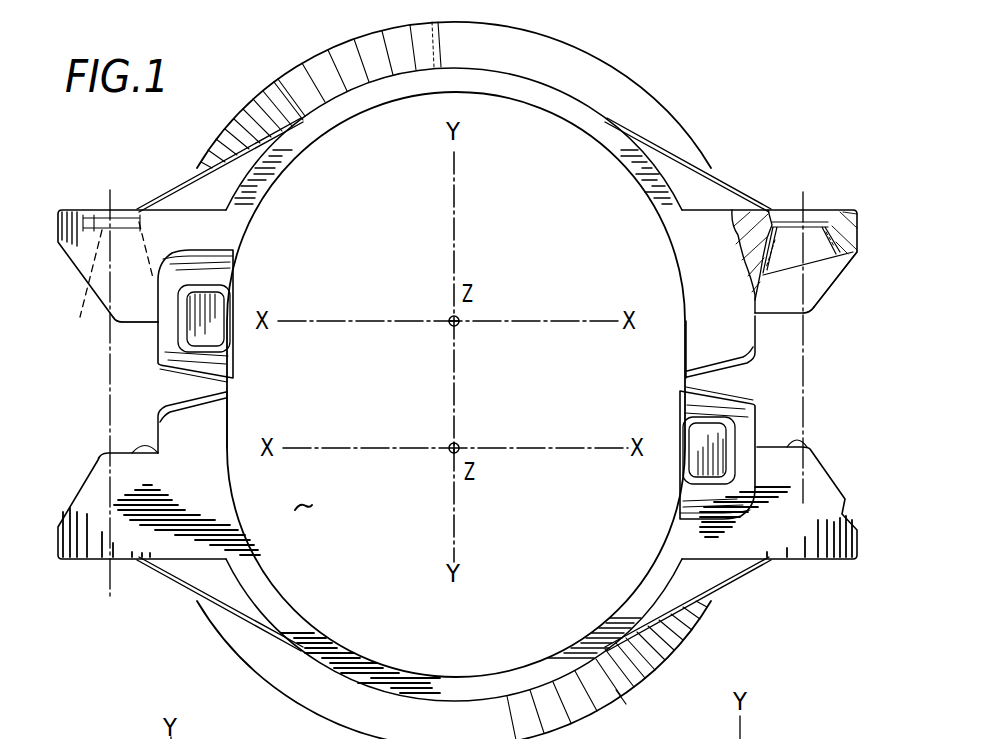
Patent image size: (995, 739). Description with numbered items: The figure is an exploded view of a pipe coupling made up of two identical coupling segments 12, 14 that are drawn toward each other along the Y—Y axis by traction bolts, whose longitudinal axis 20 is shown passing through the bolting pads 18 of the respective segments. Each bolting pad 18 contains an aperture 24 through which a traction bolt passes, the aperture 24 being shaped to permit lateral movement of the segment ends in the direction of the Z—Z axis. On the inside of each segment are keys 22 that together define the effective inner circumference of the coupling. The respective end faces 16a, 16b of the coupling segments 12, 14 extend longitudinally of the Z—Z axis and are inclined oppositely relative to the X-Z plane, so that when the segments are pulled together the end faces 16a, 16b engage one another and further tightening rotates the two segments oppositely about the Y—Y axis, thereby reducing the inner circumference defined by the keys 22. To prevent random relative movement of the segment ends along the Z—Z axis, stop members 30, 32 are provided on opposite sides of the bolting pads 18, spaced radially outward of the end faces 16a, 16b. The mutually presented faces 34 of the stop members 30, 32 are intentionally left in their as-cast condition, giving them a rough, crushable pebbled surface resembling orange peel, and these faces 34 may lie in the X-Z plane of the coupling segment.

The coupling segment 12 is at (788, 738).
The coupling segment 14 is at (628, 678).
The end face 16a is at (684, 399).
The end face 16b is at (236, 375).
The bolting pad 18 is at (750, 560).
The traction bolt axis 20 is at (840, 401).
The key 22 is at (568, 657).
The aperture 24 is at (773, 358).
The stop member 30 is at (823, 287).
The stop member 32 is at (138, 307).
The mutually presented face 34 is at (808, 440).